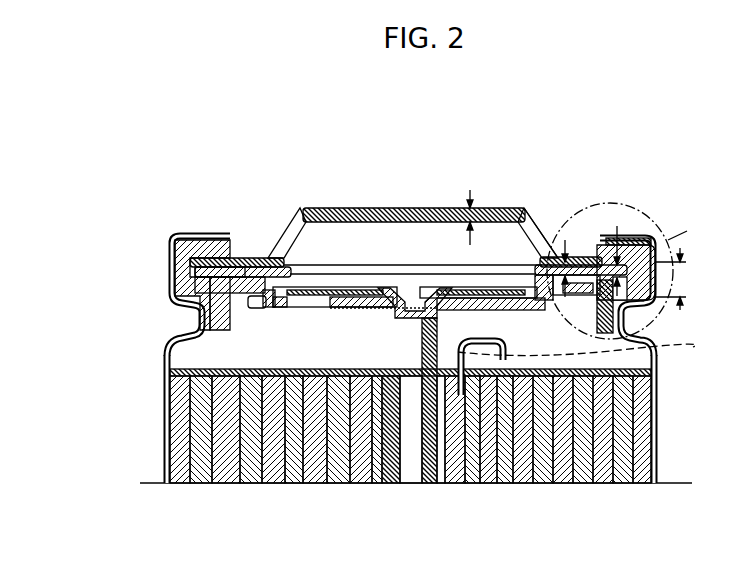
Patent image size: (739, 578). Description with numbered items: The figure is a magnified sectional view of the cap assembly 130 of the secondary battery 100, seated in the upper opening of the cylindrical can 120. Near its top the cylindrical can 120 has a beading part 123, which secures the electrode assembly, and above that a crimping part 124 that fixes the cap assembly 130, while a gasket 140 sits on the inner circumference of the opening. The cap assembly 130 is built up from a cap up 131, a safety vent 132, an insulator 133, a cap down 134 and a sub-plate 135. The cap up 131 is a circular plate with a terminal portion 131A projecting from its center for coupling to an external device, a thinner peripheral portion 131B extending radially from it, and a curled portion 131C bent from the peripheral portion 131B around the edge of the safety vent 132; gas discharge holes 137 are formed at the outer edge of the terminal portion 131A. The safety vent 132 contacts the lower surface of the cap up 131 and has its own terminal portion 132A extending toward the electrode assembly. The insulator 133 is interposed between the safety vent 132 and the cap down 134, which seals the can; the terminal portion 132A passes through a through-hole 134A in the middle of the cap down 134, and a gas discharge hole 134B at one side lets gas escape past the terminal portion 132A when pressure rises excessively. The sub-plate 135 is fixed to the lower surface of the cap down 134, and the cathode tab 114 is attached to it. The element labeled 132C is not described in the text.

The secondary battery 100 is at (201, 123).
The cathode tab 114 is at (591, 351).
The cylindrical can 120 is at (163, 403).
The beading part 123 is at (200, 318).
The crimping part 124 is at (212, 234).
The cap assembly 130 is at (421, 227).
The cap up 131 is at (461, 227).
The terminal portion 131A is at (337, 208).
The peripheral portion 131B is at (272, 252).
The curled portion 131C is at (620, 309).
The safety vent 132 is at (170, 246).
The terminal portion 132A is at (412, 322).
The flange portion 132C is at (250, 256).
The insulator 133 is at (192, 283).
The cap down 134 is at (268, 374).
The through-hole 134A is at (432, 318).
The gas discharge hole 134B is at (305, 312).
The sub-plate 135 is at (362, 312).
The gas discharge holes 137 is at (552, 220).
The gasket 140 is at (637, 246).